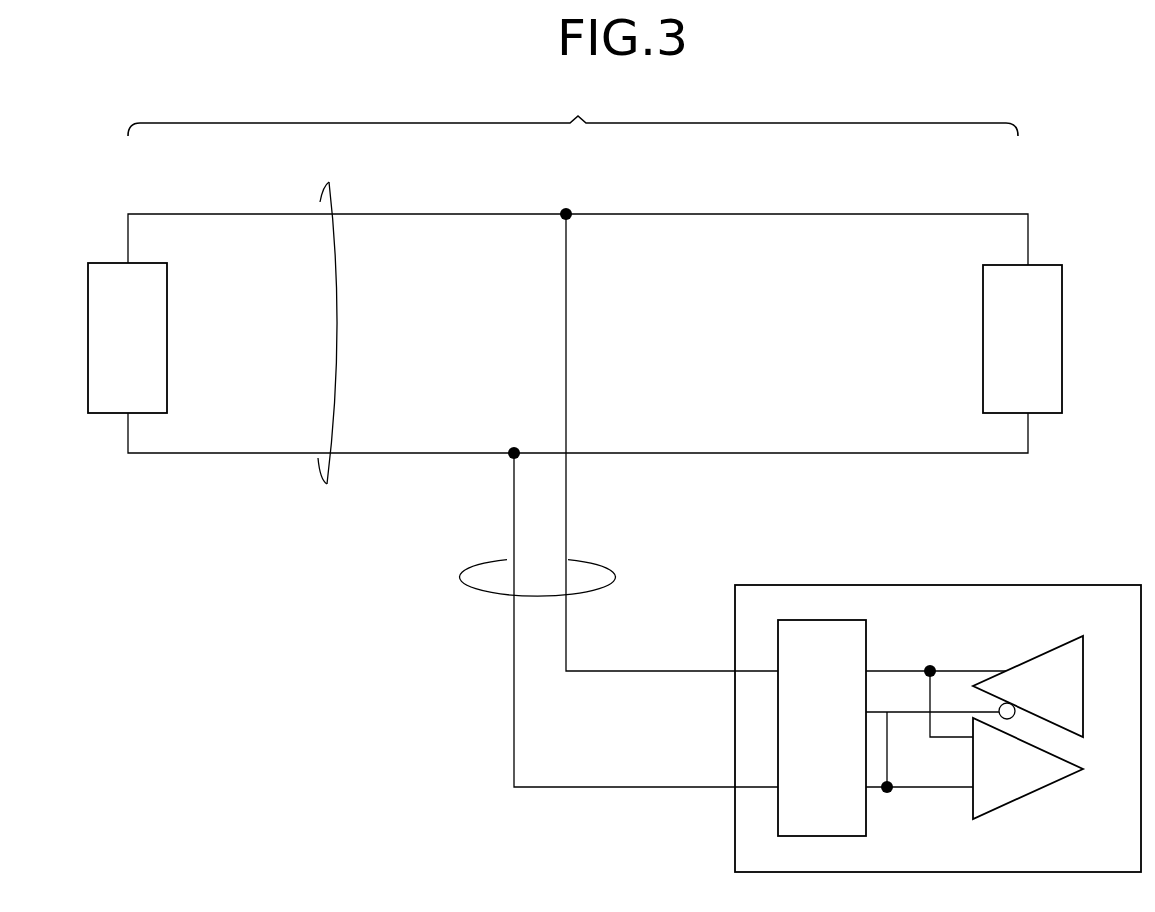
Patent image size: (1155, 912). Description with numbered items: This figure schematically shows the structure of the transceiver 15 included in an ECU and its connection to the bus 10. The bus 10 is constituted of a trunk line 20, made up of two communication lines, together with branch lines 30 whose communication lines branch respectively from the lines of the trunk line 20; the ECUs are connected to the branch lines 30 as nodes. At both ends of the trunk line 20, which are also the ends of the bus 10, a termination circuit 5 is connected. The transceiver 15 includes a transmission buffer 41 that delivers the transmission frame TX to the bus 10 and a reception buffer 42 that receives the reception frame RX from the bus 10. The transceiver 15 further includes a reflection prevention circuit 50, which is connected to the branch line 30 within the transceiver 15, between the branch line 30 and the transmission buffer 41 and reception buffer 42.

The bus 10 is at (578, 438).
The termination circuit 5 is at (108, 263).
The trunk line 20 is at (338, 199).
The branch line 30 is at (459, 578).
The transceiver 15 is at (936, 585).
The reflection prevention circuit 50 is at (866, 628).
The transmission buffer 41 is at (1060, 650).
The reception buffer 42 is at (1010, 805).